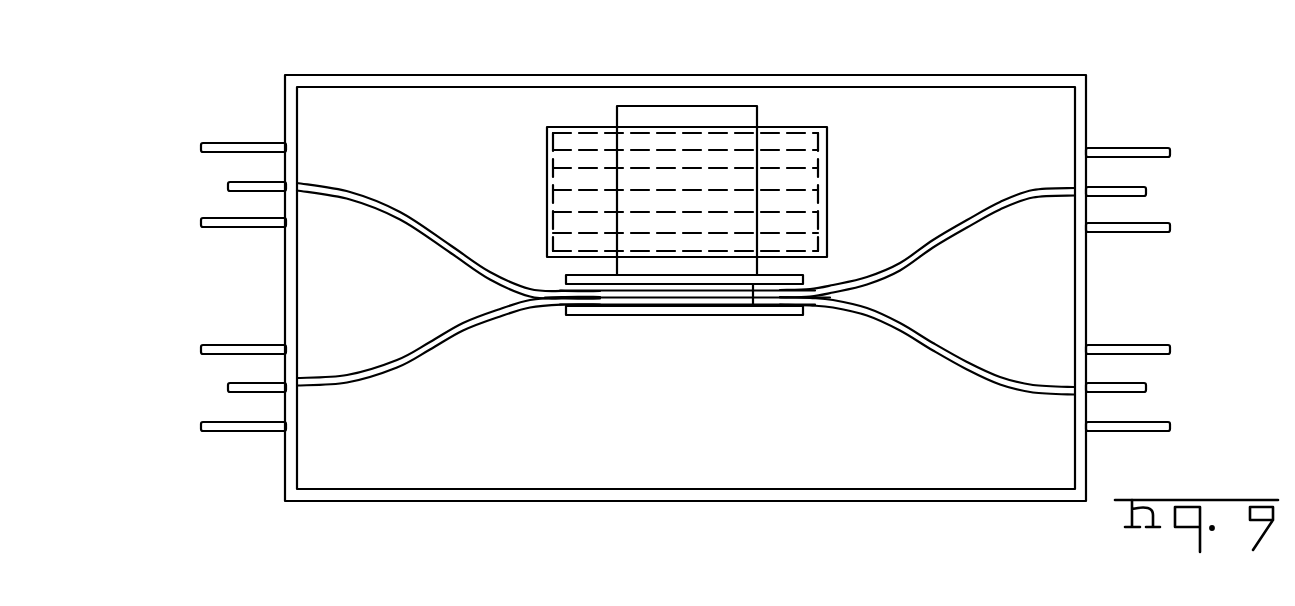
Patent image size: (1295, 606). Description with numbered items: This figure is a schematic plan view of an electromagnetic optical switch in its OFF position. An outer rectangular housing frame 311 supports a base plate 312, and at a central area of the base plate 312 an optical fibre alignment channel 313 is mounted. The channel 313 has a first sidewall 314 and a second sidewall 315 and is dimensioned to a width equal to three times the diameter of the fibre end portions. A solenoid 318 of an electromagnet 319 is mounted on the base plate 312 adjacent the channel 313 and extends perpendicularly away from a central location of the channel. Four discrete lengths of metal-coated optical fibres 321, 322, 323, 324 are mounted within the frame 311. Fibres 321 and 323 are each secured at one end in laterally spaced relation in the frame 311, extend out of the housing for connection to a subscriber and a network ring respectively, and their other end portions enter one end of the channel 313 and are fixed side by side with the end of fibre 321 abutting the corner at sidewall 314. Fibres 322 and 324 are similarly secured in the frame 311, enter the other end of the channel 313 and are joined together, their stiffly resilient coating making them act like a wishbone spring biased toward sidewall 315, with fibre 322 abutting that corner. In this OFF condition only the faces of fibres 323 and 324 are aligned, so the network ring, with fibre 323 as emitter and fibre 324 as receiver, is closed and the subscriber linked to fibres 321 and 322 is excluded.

The housing frame 311 is at (284, 477).
The base plate 312 is at (561, 423).
The optical fibre alignment channel 313 is at (651, 317).
The first sidewall 314 is at (790, 282).
The second sidewall 315 is at (772, 317).
The solenoid 318 is at (693, 120).
The electromagnet 319 is at (797, 140).
The optical fibre 321 is at (1030, 190).
The optical fibre 322 is at (348, 386).
The optical fibre 323 is at (1012, 388).
The optical fibre 324 is at (383, 200).